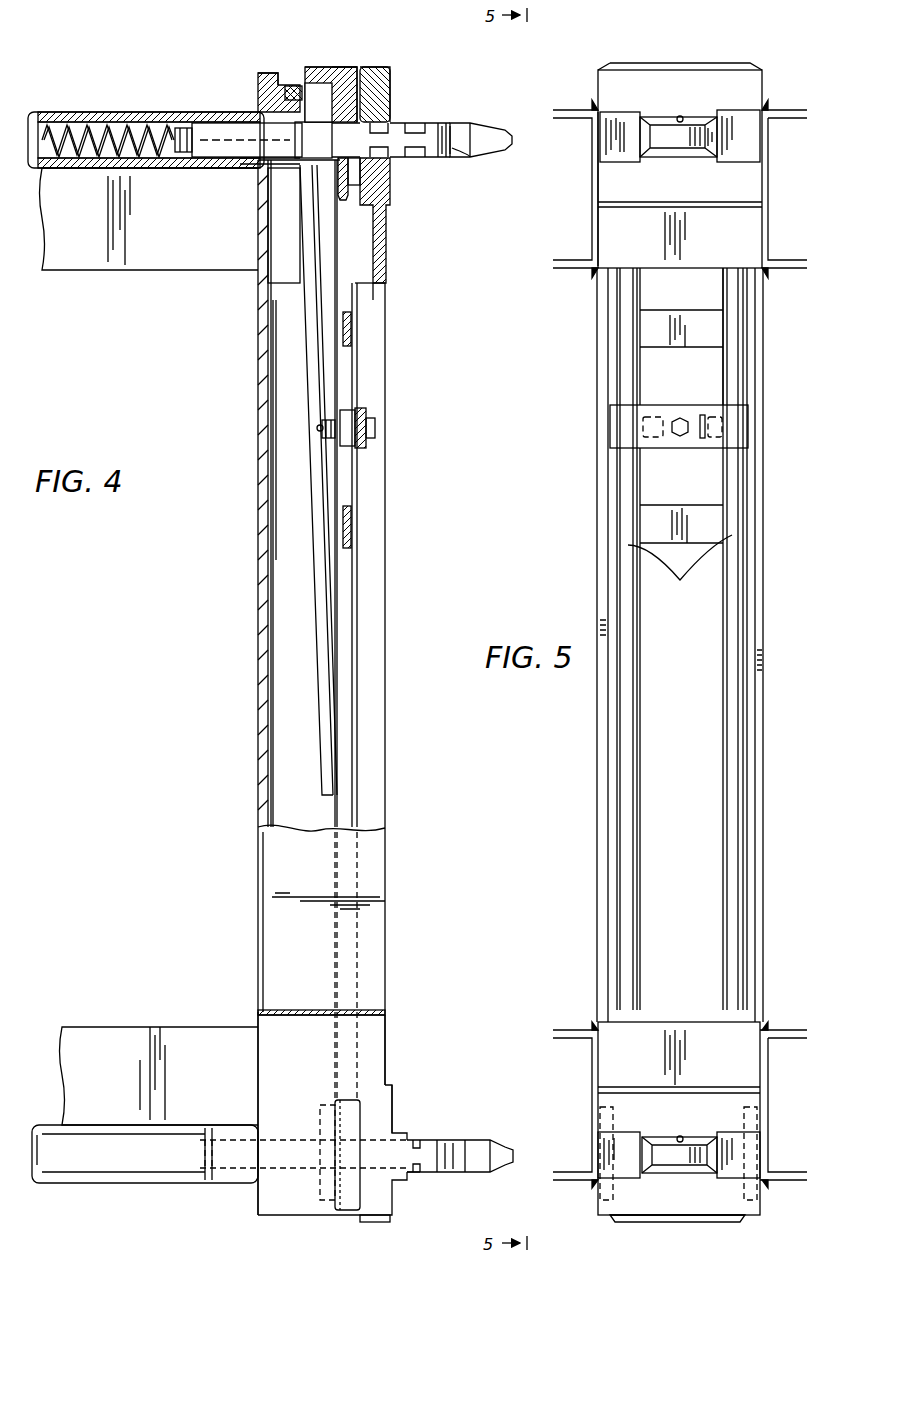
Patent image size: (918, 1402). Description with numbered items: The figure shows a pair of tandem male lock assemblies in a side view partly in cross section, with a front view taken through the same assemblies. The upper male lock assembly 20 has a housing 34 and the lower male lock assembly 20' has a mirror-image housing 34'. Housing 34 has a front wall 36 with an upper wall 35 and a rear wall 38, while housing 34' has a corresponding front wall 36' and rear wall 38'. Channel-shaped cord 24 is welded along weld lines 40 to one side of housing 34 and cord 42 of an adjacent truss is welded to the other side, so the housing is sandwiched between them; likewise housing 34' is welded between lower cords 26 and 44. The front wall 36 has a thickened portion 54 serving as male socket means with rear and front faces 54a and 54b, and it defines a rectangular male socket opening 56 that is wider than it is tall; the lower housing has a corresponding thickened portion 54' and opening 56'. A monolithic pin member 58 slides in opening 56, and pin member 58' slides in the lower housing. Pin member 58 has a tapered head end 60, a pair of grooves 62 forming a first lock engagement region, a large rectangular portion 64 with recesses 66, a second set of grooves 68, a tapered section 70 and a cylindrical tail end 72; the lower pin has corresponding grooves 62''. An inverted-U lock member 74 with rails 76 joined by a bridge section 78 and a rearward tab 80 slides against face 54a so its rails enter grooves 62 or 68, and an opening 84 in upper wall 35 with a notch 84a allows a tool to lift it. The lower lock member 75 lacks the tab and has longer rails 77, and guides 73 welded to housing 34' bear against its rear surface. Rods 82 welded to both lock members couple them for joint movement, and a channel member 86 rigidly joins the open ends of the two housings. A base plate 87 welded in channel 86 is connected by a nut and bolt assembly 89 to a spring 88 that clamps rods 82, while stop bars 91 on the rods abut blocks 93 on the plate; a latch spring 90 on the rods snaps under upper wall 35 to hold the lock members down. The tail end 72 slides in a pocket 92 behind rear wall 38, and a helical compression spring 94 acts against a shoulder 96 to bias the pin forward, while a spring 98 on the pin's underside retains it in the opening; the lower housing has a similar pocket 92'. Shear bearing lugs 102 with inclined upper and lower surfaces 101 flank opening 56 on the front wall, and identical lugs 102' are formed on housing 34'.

In FIG. 4, the upper male lock assembly 20 is at (490, 271).
In FIG. 4, the lower male lock assembly 20' is at (442, 1000).
In FIG. 5, the cord 24 is at (590, 195).
In FIG. 4, the lower cord 26 is at (90, 1030).
In FIG. 5, the lower cord 26 is at (592, 1075).
In FIG. 4, the housing 34 is at (307, 480).
In FIG. 4, the housing 34' is at (332, 1089).
In FIG. 4, the upper wall 35 is at (276, 73).
In FIG. 4, the front wall 36 is at (412, 270).
In FIG. 5, the front wall 36 is at (700, 165).
In FIG. 4, the front wall 36' is at (423, 1050).
In FIG. 5, the front wall 36' is at (699, 1098).
In FIG. 4, the rear wall 38 is at (227, 240).
In FIG. 4, the rear wall 38' is at (284, 1096).
In FIG. 5, the weld lines 40 is at (594, 105).
In FIG. 4, the cord 42 is at (70, 270).
In FIG. 5, the cord 42 is at (764, 180).
In FIG. 5, the lower cord 44 is at (762, 1080).
In FIG. 4, the thickened portion 54 is at (395, 241).
In FIG. 4, the rear wall 54a is at (352, 62).
In FIG. 4, the front wall 54b is at (392, 82).
In FIG. 4, the thickened portion 54' is at (420, 1108).
In FIG. 5, the thickened portion 54' is at (677, 1227).
In FIG. 4, the male socket opening 56 is at (416, 189).
In FIG. 5, the male socket opening 56 is at (686, 67).
In FIG. 5, the male socket opening 56' is at (702, 1097).
In FIG. 4, the pin member 58 is at (301, 109).
In FIG. 5, the pin member 58 is at (660, 85).
In FIG. 4, the pin member 58' is at (334, 1176).
In FIG. 5, the pin member 58' is at (667, 1113).
In FIG. 4, the head end 60 is at (492, 125).
In FIG. 5, the head end 60 is at (716, 138).
In FIG. 4, the grooves 62 is at (476, 171).
In FIG. 4, the grooves 62'' is at (460, 1134).
In FIG. 4, the rectangular portion 64 is at (440, 135).
In FIG. 4, the recesses 66 is at (410, 124).
In FIG. 4, the grooves 68 is at (268, 305).
In FIG. 4, the tapered section 70 is at (300, 140).
In FIG. 4, the tail end 72 is at (246, 162).
In FIG. 4, the guides 73 is at (322, 1118).
In FIG. 5, the guides 73 is at (754, 1122).
In FIG. 4, the lock member 74 is at (346, 67).
In FIG. 4, the lock member 75 is at (347, 1093).
In FIG. 4, the rails 76 is at (358, 312).
In FIG. 4, the rails 77 is at (345, 1195).
In FIG. 4, the bridge section 78 is at (380, 100).
In FIG. 4, the tab 80 is at (318, 67).
In FIG. 4, the rods 82 is at (348, 567).
In FIG. 5, the rods 82 is at (682, 639).
In FIG. 4, the opening 84 is at (292, 86).
In FIG. 4, the notch 84a is at (286, 96).
In FIG. 4, the channel member 86 is at (258, 686).
In FIG. 5, the channel member 86 is at (755, 578).
In FIG. 4, the base plate 87 is at (368, 445).
In FIG. 5, the base plate 87 is at (742, 433).
In FIG. 4, the spring 88 is at (325, 448).
In FIG. 4, the nut and bolt assembly 89 is at (380, 427).
In FIG. 5, the nut and bolt assembly 89 is at (680, 440).
In FIG. 4, the latch spring 90 is at (313, 513).
In FIG. 4, the stop bars 91 is at (345, 348).
In FIG. 5, the stop bars 91 is at (648, 325).
In FIG. 4, the pocket 92 is at (146, 165).
In FIG. 4, the pocket 92' is at (145, 1177).
In FIG. 4, the blocks 93 is at (320, 428).
In FIG. 5, the blocks 93 is at (724, 410).
In FIG. 4, the helical compression spring 94 is at (110, 124).
In FIG. 4, the shoulder 96 is at (186, 152).
In FIG. 4, the spring 98 is at (300, 170).
In FIG. 5, the upper and lower surfaces 101 is at (612, 115).
In FIG. 4, the shear bearing lugs 102 is at (394, 194).
In FIG. 5, the shear bearing lugs 102 is at (719, 149).
In FIG. 4, the shear bearing lugs 102' is at (420, 1211).
In FIG. 5, the shear bearing lugs 102' is at (668, 1137).